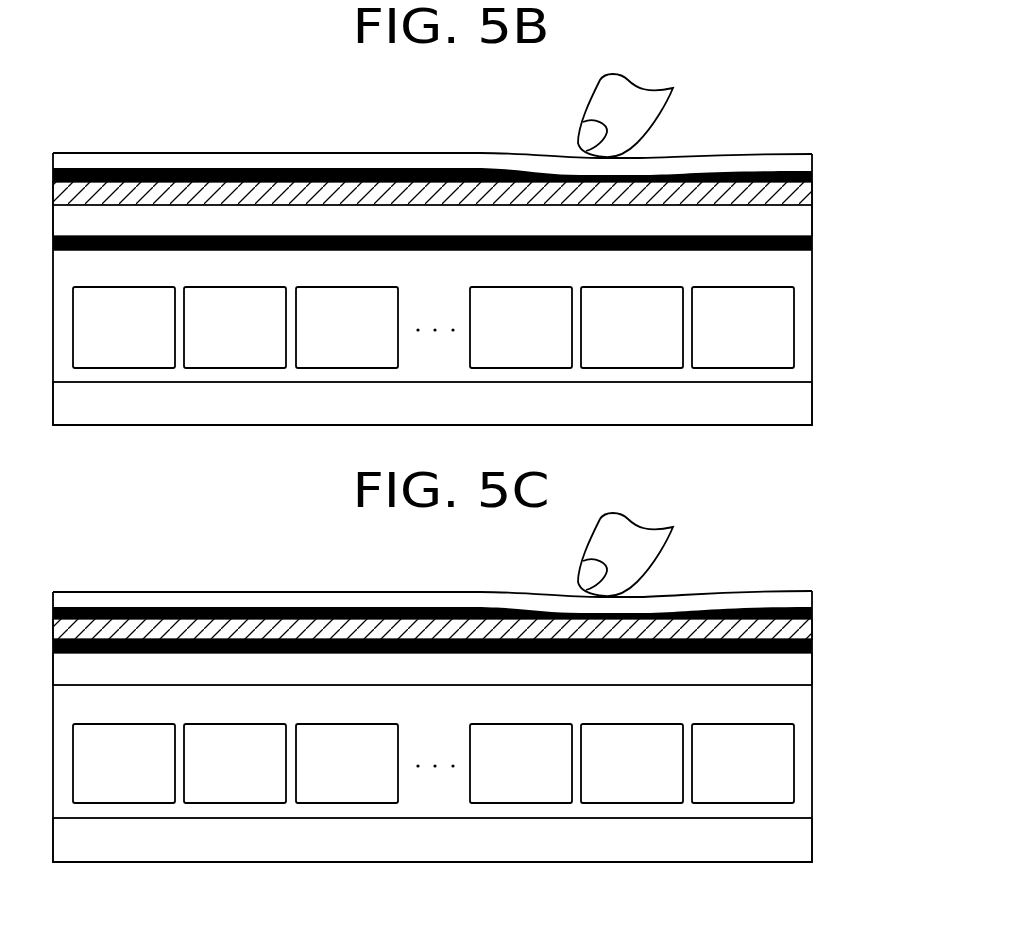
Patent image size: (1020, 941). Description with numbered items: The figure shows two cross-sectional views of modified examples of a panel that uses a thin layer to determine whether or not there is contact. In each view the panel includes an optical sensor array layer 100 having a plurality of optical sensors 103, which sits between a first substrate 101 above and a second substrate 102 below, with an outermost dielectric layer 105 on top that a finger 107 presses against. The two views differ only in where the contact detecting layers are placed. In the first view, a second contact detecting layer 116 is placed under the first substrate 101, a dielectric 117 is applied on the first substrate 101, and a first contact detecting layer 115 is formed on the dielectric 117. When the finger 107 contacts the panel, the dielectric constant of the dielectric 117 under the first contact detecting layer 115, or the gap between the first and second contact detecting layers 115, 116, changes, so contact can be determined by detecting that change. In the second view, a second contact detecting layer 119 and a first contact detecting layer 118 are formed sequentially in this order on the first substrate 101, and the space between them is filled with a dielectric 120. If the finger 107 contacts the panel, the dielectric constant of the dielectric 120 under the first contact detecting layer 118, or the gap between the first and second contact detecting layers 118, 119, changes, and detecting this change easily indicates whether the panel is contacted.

In FIG. 5B, the optical sensor array layer 100 is at (812, 303).
In FIG. 5C, the optical sensor array layer 100 is at (812, 740).
In FIG. 5B, the first substrate 101 is at (803, 225).
In FIG. 5C, the first substrate 101 is at (803, 676).
In FIG. 5B, the second substrate 102 is at (800, 397).
In FIG. 5C, the second substrate 102 is at (800, 834).
In FIG. 5B, the optical sensor 103 is at (747, 278).
In FIG. 5C, the optical sensor 103 is at (738, 722).
In FIG. 5B, the dielectric layer 105 is at (803, 163).
In FIG. 5C, the dielectric layer 105 is at (803, 600).
In FIG. 5B, the finger 107 is at (650, 113).
In FIG. 5C, the finger 107 is at (650, 552).
In FIG. 5B, the first contact detecting layer 115 is at (812, 178).
In FIG. 5B, the second contact detecting layer 116 is at (812, 245).
In FIG. 5B, the dielectric 117 is at (803, 193).
In FIG. 5C, the first contact detecting layer 118 is at (812, 617).
In FIG. 5C, the second contact detecting layer 119 is at (812, 648).
In FIG. 5C, the dielectric 120 is at (803, 633).